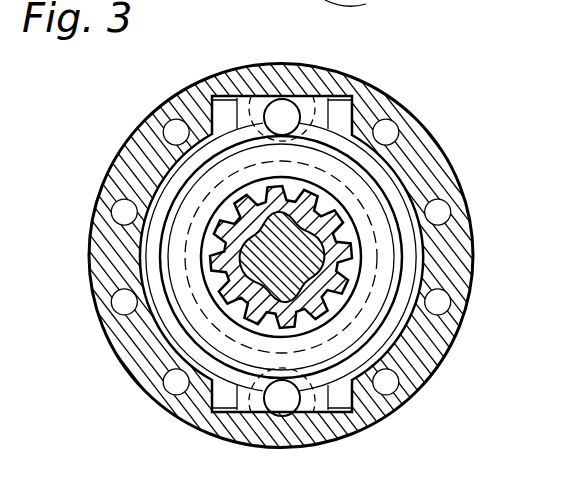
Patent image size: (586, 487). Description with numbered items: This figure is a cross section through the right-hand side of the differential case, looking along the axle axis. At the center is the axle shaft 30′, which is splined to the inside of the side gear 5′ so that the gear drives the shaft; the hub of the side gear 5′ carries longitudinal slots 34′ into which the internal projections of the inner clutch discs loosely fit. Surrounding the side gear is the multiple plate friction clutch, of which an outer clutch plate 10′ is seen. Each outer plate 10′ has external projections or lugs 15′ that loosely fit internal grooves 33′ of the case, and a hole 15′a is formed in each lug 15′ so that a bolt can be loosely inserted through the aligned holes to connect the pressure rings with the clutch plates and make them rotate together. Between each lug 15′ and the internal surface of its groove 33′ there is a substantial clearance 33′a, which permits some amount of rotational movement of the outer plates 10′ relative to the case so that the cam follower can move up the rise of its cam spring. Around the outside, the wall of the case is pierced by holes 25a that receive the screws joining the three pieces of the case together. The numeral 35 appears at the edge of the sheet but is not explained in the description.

The splined shaft 5′ is at (240, 210).
The flange member 10′ is at (388, 187).
The retaining ring 15′ is at (335, 106).
The locking ball 15′a is at (290, 103).
The bolt holes 25a is at (452, 303).
The hub 30′ is at (247, 258).
The ring gap 33′ is at (240, 104).
The ring tabs 33′a is at (217, 107).
The sleeve bore 34′ is at (225, 293).
The adjacent figure element (partial) 35 is at (358, 8).